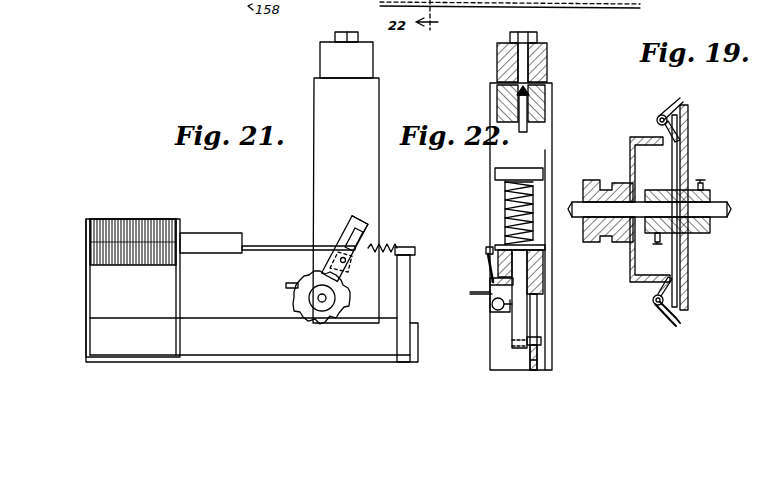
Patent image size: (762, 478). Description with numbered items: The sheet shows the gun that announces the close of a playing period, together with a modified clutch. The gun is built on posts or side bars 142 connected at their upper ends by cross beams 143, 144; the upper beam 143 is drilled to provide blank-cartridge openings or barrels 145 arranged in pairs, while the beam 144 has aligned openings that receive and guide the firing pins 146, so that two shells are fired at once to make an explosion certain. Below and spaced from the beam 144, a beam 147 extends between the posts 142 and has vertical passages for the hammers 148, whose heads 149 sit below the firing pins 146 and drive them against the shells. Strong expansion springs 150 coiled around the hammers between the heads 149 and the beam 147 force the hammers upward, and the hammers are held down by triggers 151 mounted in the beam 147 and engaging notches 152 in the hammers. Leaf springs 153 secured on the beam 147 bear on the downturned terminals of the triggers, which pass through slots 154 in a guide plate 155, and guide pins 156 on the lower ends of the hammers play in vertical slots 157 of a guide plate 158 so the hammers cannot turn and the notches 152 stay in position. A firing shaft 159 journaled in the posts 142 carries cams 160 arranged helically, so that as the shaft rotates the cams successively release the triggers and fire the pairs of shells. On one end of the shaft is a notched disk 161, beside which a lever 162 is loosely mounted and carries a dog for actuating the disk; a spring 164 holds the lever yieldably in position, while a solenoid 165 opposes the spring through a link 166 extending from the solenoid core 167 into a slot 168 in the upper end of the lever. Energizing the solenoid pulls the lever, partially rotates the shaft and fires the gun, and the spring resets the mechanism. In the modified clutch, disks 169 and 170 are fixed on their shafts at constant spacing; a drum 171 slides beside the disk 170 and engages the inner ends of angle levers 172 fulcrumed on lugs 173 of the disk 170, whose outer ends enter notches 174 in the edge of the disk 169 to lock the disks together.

In FIG. 21, the posts 142 is at (379, 160).
In FIG. 22, the posts 142 is at (545, 134).
In FIG. 21, the cross beam 143 is at (373, 58).
In FIG. 22, the cross beam 143 is at (547, 58).
In FIG. 22, the cross beam 144 is at (540, 99).
In FIG. 22, the barrels 145 is at (512, 46).
In FIG. 22, the firing pins 146 is at (519, 125).
In FIG. 22, the beam 147 is at (543, 288).
In FIG. 22, the hammers 148 is at (505, 213).
In FIG. 22, the heads 149 is at (516, 168).
In FIG. 22, the expansion springs 150 is at (505, 184).
In FIG. 22, the triggers 151 is at (486, 310).
In FIG. 22, the notches 152 is at (525, 272).
In FIG. 22, the leaf springs 153 is at (487, 262).
In FIG. 22, the slots 154 is at (490, 281).
In FIG. 21, the guide plate 155 is at (286, 285).
In FIG. 22, the guide plate 155 is at (470, 293).
In FIG. 22, the guide pins 156 is at (541, 343).
In FIG. 22, the vertical slots 157 is at (537, 320).
In FIG. 22, the guide plate 158 is at (530, 360).
In FIG. 21, the firing shaft 159 is at (318, 298).
In FIG. 22, the firing shaft 159 is at (498, 312).
In FIG. 22, the cams 160 is at (504, 315).
In FIG. 21, the notched disk 161 is at (336, 322).
In FIG. 21, the lever 162 is at (350, 220).
In FIG. 21, the spring 164 is at (389, 246).
In FIG. 21, the solenoid 165 is at (146, 222).
In FIG. 21, the link 166 is at (292, 246).
In FIG. 21, the solenoid core 167 is at (214, 233).
In FIG. 21, the slot 168 is at (366, 220).
In FIG. 19, the disk 169 is at (688, 142).
In FIG. 19, the disk 170 is at (672, 165).
In FIG. 19, the drum 171 is at (585, 180).
In FIG. 19, the angle levers 172 is at (662, 115).
In FIG. 19, the lugs 173 is at (680, 323).
In FIG. 19, the notches 174 is at (688, 107).